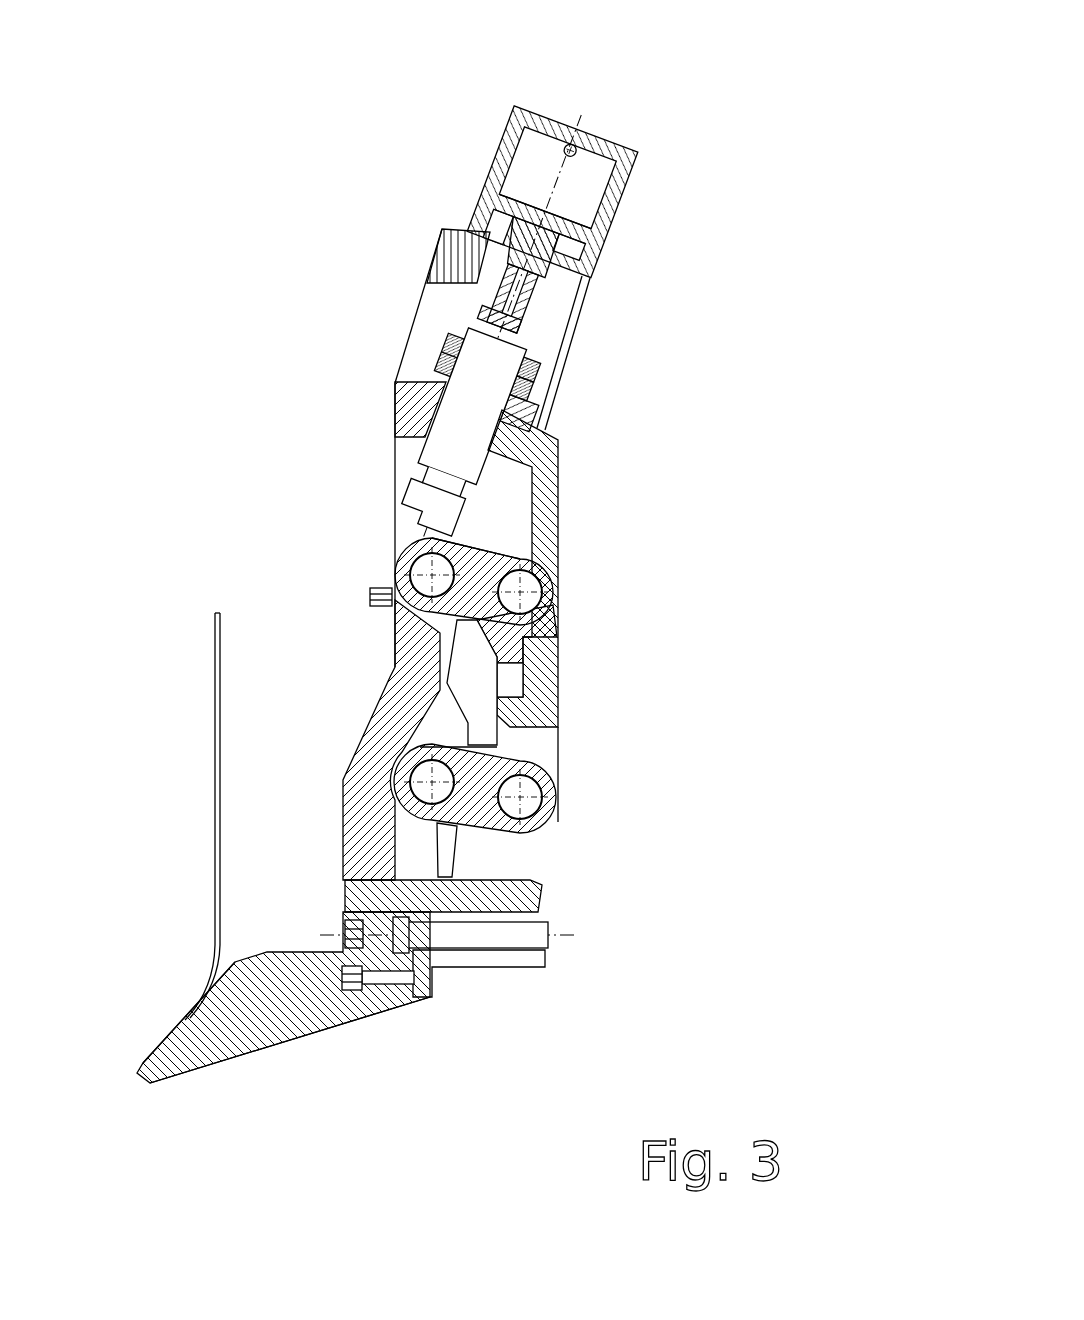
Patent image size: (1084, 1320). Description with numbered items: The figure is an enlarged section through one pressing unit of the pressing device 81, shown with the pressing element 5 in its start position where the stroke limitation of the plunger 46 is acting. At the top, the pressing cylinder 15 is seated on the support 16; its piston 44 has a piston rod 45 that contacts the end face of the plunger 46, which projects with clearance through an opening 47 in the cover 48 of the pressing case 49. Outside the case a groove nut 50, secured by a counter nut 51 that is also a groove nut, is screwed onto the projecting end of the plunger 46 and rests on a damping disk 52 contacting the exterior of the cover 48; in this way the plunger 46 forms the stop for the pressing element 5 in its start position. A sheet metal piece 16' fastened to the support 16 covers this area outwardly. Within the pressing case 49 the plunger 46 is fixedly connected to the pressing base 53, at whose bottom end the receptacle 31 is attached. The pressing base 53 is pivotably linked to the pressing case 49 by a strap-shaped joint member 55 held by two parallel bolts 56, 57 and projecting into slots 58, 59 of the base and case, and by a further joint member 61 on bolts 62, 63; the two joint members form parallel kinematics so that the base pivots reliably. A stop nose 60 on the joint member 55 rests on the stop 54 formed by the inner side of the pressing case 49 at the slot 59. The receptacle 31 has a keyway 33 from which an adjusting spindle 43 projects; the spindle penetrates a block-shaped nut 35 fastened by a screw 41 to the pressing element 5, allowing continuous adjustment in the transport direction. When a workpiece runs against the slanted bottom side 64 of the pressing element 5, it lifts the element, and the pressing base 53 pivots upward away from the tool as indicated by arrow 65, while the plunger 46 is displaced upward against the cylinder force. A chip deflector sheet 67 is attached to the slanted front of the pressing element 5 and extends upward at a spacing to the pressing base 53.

The pressing device 81 is at (410, 94).
The piston 44 is at (522, 268).
The pressing cylinder 15 is at (618, 228).
The cover 48 is at (402, 378).
The opening 47 is at (394, 428).
The piston rod 45 is at (593, 290).
The support 16 is at (683, 354).
The sheet metal piece 16' is at (704, 352).
The counter nut 51 is at (533, 375).
The groove nut 50 is at (525, 400).
The damping disk 52 is at (515, 410).
The slot 58 is at (405, 455).
The plunger 46 is at (475, 453).
The slot 59 is at (552, 572).
The pressing case 49 is at (572, 518).
The bolt 56 is at (395, 568).
The joint member 55 is at (560, 586).
The bolt 57 is at (548, 603).
The stop nose 60 is at (560, 640).
The stop 54 is at (540, 657).
The pressing base 53 is at (380, 722).
The chip deflector sheet 67 is at (213, 688).
The joint member 61 is at (548, 780).
The bolt 63 is at (545, 812).
The bolt 62 is at (395, 803).
The receptacle 31 is at (537, 887).
The arrow 65 is at (143, 1057).
The adjusting spindle 43 is at (517, 938).
The keyway 33 is at (477, 968).
The bottom side 64 is at (289, 1036).
The nut 35 is at (407, 1003).
The pressing element 5 is at (222, 1032).
The screw 41 is at (372, 985).